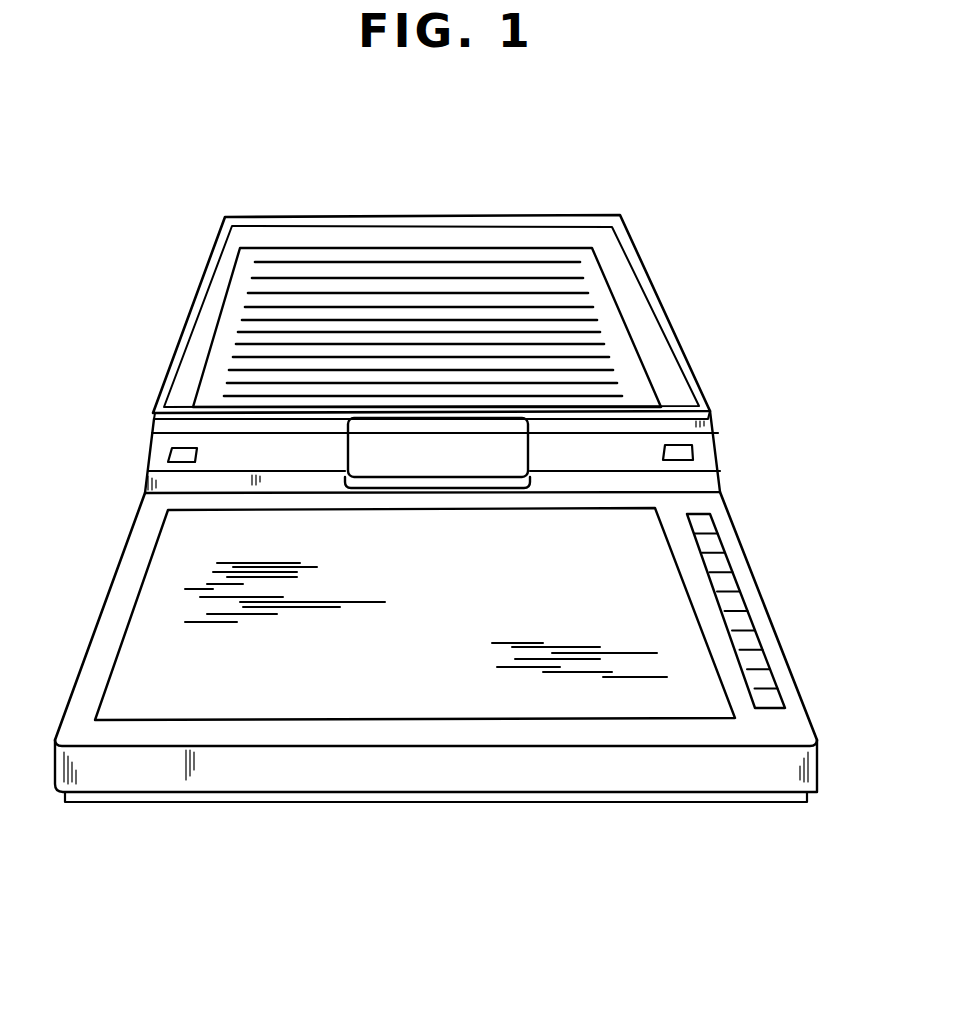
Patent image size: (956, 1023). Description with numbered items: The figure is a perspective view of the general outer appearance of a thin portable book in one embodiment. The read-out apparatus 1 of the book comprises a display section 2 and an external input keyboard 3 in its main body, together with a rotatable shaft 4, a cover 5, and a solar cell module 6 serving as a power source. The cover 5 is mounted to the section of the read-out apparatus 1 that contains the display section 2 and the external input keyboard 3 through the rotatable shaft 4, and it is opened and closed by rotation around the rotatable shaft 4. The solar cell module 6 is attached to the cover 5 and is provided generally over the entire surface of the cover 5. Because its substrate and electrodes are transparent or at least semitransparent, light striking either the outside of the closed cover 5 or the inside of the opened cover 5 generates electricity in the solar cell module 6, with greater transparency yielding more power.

The read-out apparatus 1 is at (730, 538).
The display section 2 is at (458, 702).
The external input keyboard 3 is at (745, 603).
The rotatable shaft 4 is at (168, 450).
The cover 5 is at (663, 307).
The solar cell module 6 is at (592, 277).